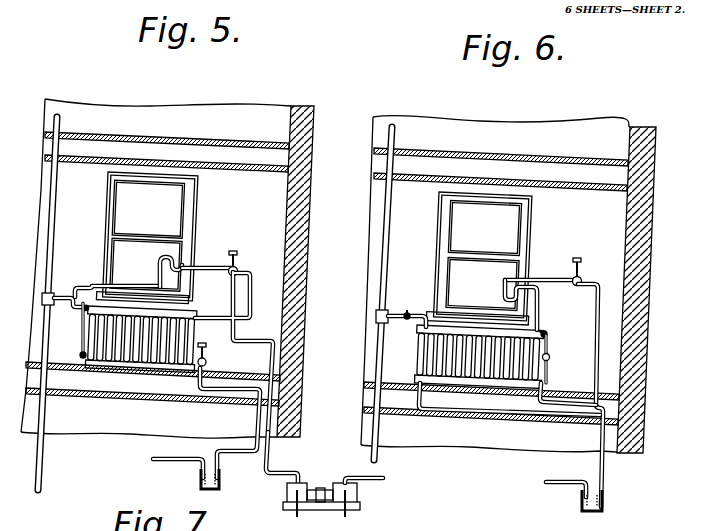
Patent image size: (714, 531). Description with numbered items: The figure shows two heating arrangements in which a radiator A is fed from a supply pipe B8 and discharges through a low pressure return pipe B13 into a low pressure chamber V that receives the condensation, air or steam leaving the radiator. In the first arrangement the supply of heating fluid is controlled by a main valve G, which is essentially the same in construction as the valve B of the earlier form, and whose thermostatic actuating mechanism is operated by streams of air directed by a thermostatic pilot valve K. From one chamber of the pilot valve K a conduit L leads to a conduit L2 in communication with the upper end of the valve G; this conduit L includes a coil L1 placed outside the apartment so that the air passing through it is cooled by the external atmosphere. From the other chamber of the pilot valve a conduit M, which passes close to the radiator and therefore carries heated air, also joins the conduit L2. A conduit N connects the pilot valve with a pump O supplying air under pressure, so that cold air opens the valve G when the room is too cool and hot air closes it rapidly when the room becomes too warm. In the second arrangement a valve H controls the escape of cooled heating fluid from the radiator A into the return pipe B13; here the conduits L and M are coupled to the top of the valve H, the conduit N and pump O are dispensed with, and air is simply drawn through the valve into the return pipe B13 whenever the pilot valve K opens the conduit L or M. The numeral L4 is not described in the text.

In FIG. 5, the radiator A is at (201, 329).
In FIG. 6, the radiator A is at (420, 352).
In FIG. 5, the valve B is at (59, 293).
In FIG. 6, the valve B is at (383, 293).
In FIG. 5, the supply pipe B8 is at (71, 304).
In FIG. 6, the supply pipe B8 is at (397, 311).
In FIG. 5, the low pressure return pipe B13 is at (230, 425).
In FIG. 6, the low pressure return pipe B13 is at (603, 481).
In FIG. 5, the valve G is at (80, 331).
In FIG. 6, the valve H is at (548, 356).
In FIG. 5, the thermostatic pilot valve K is at (239, 259).
In FIG. 6, the thermostatic pilot valve K is at (583, 268).
In FIG. 5, the conduit L is at (207, 257).
In FIG. 6, the conduit L is at (540, 270).
In FIG. 5, the coil L1 is at (163, 263).
In FIG. 6, the coil L1 is at (504, 282).
In FIG. 6, the conduit L2 is at (553, 328).
In FIG. 5, the branch pipe L4 is at (80, 294).
In FIG. 5, the conduit M is at (251, 298).
In FIG. 6, the conduit M is at (598, 318).
In FIG. 5, the conduit N is at (266, 455).
In FIG. 5, the pump O is at (307, 488).
In FIG. 5, the low pressure chamber V is at (219, 488).
In FIG. 6, the low pressure chamber V is at (604, 503).